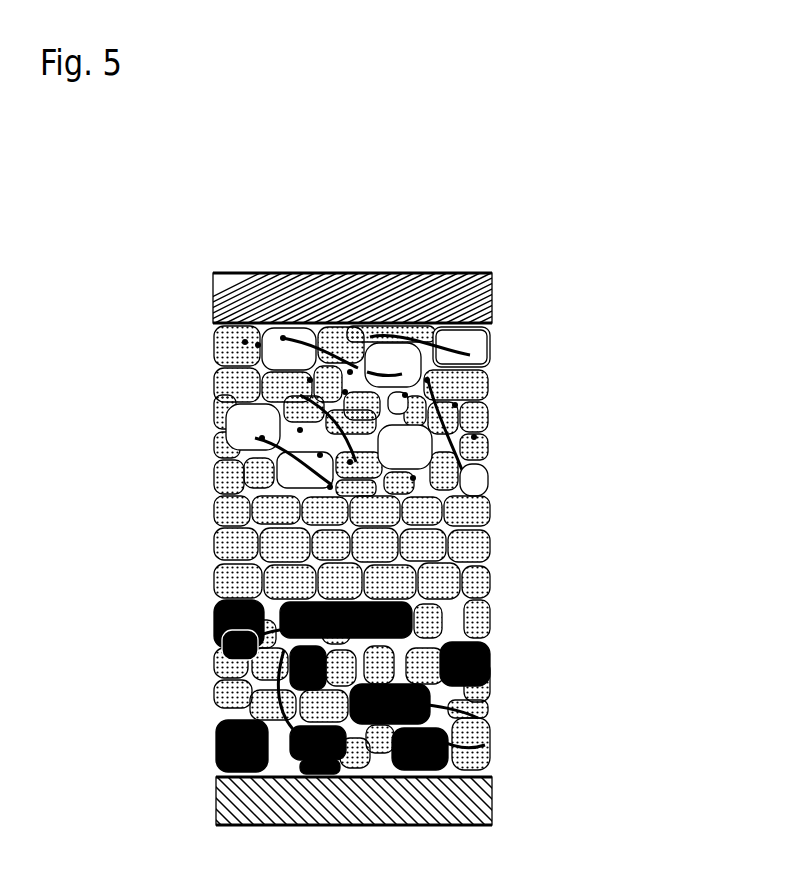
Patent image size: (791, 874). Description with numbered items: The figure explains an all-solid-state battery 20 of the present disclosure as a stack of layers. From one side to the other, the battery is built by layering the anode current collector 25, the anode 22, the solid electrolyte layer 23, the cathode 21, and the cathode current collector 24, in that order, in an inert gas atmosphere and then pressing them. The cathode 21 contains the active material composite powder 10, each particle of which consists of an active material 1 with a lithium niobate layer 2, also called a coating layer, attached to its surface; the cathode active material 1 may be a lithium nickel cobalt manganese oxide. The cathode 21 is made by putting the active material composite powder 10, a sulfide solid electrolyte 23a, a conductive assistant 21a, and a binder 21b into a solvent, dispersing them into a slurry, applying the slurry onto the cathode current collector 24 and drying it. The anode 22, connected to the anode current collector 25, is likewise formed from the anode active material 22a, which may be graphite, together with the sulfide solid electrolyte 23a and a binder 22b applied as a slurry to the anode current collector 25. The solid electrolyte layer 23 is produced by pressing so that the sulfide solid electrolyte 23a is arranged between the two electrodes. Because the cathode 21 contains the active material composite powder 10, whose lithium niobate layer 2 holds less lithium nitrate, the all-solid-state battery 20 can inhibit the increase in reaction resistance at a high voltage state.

The all-solid-state battery 20 is at (424, 159).
The cathode current collector 24 is at (486, 295).
The anode current collector 25 is at (487, 796).
The cathode 21 is at (397, 409).
The anode 22 is at (399, 686).
The solid electrolyte layer 23 is at (578, 544).
The active material composite powder 10 is at (368, 405).
The active material 1 is at (481, 341).
The lithium niobate layer 2 is at (491, 361).
The conductive assistant 21a is at (215, 404).
The binder 21b is at (488, 462).
The anode active material 22a is at (226, 613).
The binder 22b is at (222, 638).
The sulfide solid electrolyte 23a is at (228, 379).